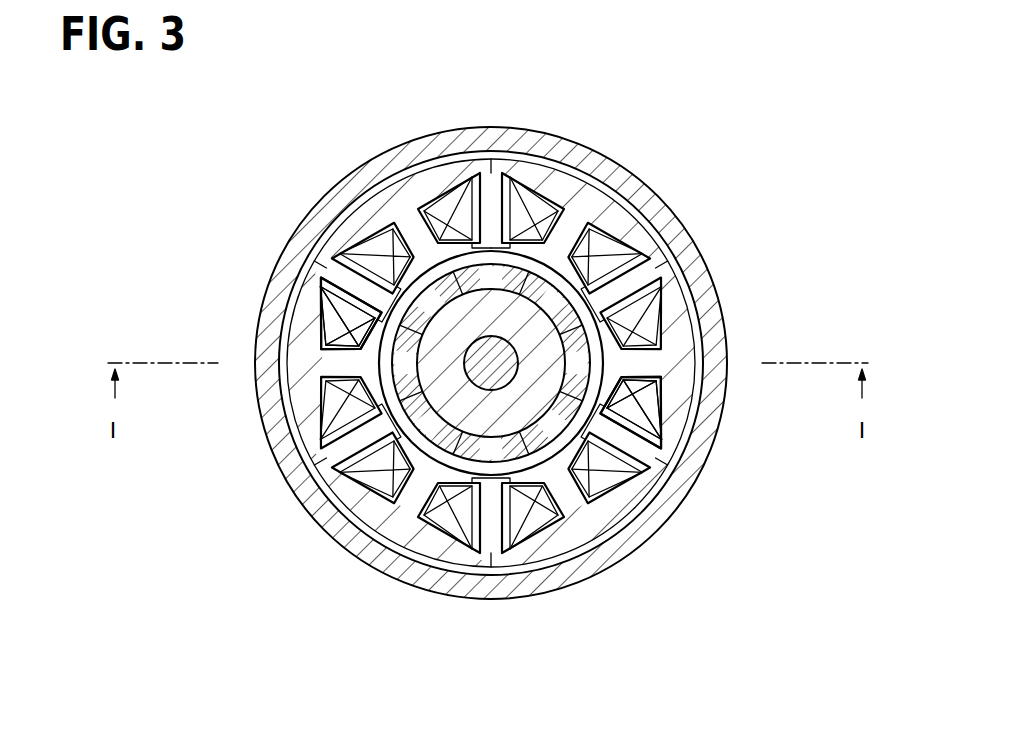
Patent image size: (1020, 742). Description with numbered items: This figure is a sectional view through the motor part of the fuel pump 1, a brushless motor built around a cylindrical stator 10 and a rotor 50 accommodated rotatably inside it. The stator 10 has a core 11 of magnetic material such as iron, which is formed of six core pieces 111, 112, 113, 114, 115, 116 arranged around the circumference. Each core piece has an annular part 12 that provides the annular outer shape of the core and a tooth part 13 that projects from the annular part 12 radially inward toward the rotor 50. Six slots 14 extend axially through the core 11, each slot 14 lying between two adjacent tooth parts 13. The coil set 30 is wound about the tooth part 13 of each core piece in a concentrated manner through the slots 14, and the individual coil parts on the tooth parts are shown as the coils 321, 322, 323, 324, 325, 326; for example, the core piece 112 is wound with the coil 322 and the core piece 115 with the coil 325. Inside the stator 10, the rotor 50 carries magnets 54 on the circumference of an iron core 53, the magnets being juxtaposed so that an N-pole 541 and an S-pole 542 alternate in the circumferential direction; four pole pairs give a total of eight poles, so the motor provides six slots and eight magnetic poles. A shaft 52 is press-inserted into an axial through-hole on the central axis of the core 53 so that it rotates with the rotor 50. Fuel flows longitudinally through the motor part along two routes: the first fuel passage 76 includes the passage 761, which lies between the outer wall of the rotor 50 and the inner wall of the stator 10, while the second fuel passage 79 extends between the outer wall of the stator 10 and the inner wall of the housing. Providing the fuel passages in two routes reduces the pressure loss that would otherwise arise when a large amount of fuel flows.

The motor 1 is at (735, 93).
The stator 10 is at (415, 166).
The core 11 is at (492, 324).
The core piece 111 is at (389, 522).
The core piece 112 is at (305, 383).
The core piece 113 is at (392, 202).
The core piece 114 is at (587, 208).
The core piece 115 is at (680, 383).
The core piece 116 is at (595, 545).
The annular part 12 is at (683, 326).
The tooth part 13 is at (340, 340).
The slot 14 is at (345, 286).
The coil set 30 is at (485, 373).
The coil 321 is at (452, 505).
The coil 322 is at (332, 462).
The coil 323 is at (377, 250).
The coil 324 is at (541, 212).
The coil 325 is at (652, 300).
The coil 326 is at (625, 500).
The rotor 50 is at (440, 447).
The shaft 52 is at (407, 452).
The iron core 53 is at (503, 420).
The magnet 54 is at (489, 139).
The N-pole 541 is at (463, 160).
The S-pole 542 is at (514, 160).
The first fuel passage 76 is at (534, 363).
The passage 761 is at (660, 232).
The second fuel passage 79 is at (640, 218).